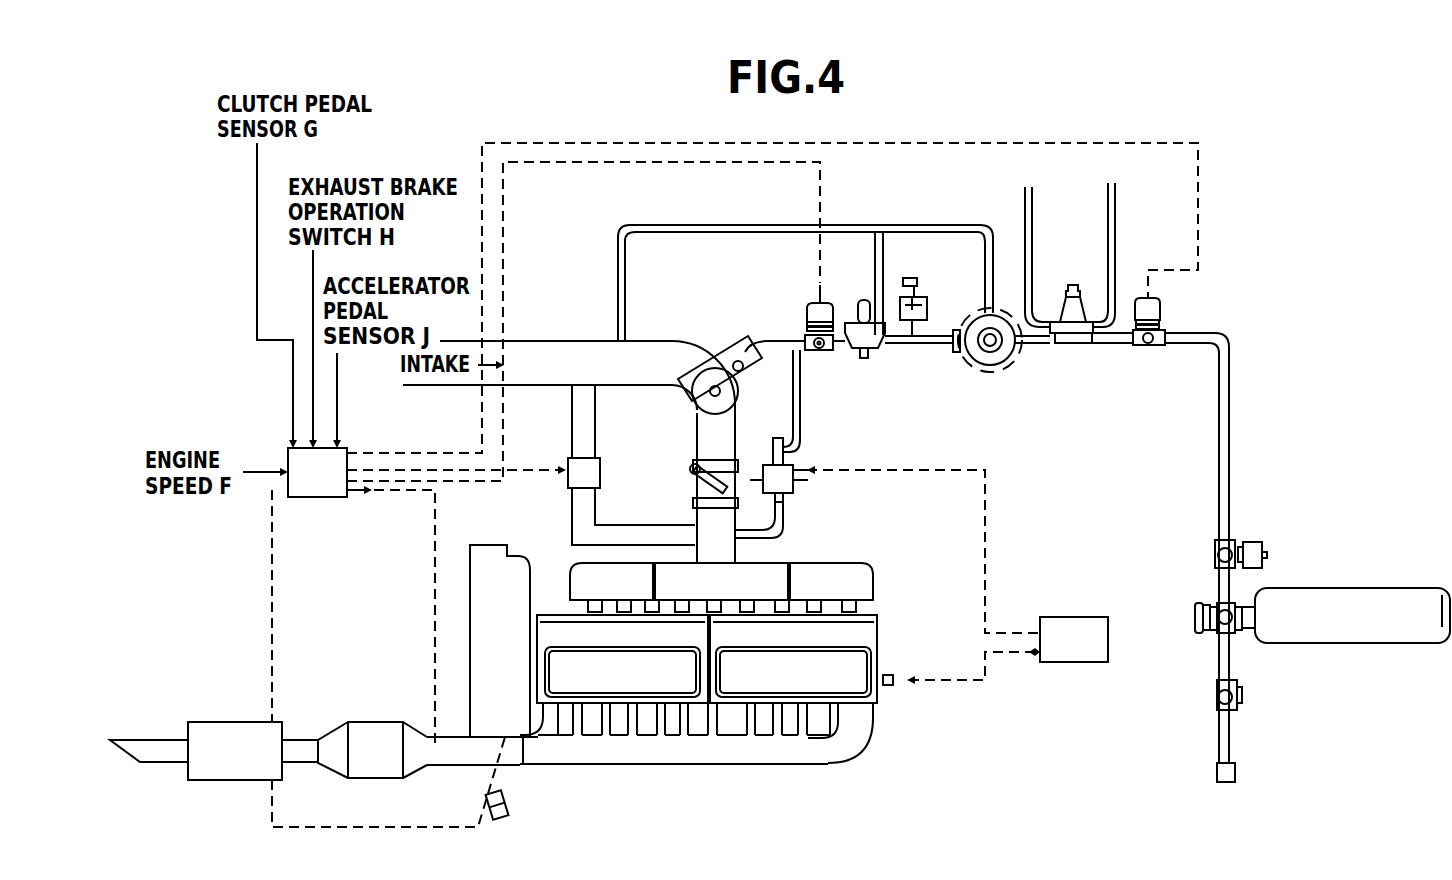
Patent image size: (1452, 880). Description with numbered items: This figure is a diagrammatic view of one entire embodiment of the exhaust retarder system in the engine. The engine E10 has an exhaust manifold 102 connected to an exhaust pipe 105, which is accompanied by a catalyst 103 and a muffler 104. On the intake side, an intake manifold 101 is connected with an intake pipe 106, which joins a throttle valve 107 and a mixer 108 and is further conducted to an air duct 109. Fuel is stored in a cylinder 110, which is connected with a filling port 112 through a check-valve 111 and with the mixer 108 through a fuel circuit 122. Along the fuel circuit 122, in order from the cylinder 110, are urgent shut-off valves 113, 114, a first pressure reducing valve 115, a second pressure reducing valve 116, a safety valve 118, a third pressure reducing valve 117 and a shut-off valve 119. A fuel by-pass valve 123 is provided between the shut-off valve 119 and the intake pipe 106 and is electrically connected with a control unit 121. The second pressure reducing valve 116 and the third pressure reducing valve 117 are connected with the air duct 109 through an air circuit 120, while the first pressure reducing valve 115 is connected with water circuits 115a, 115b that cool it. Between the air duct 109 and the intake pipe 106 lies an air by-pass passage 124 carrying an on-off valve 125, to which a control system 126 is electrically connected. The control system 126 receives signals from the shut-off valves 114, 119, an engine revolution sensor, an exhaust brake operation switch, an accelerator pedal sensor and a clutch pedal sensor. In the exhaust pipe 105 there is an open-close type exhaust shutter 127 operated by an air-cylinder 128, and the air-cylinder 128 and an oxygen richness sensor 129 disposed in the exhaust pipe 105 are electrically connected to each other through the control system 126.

The intake manifold 101 is at (870, 575).
The exhaust manifold 102 is at (713, 748).
The catalyst 103 is at (363, 763).
The muffler 104 is at (220, 767).
The exhaust pipe 105 is at (457, 750).
The intake pipe 106 is at (735, 550).
The throttle valve 107 is at (692, 480).
The mixer 108 is at (733, 355).
The air duct 109 is at (538, 341).
The cylinder 110 is at (1410, 635).
The check-valve 111 is at (1242, 690).
The filling port 112 is at (1235, 767).
The urgent shut-off valve 113 is at (1248, 540).
The urgent shut-off valve 114 is at (1152, 297).
The first pressure reducing valve 115 is at (1075, 307).
The water circuit 115a is at (1120, 207).
The water circuit 115b is at (1032, 235).
The second pressure reducing valve 116 is at (1011, 352).
The third pressure reducing valve 117 is at (848, 353).
The safety valve 118 is at (925, 297).
The shut-off valve 119 is at (805, 315).
The air circuit 120 is at (847, 225).
The control unit 121 is at (1083, 617).
The fuel circuit 122 is at (1230, 387).
The fuel by-pass valve 123 is at (793, 490).
The air by-pass passage 124 is at (582, 517).
The on-off valve 125 is at (570, 467).
The control system 126 is at (352, 447).
The exhaust shutter 127 is at (502, 743).
The air-cylinder 128 is at (510, 817).
The oxygen richness sensor 129 is at (436, 743).
The engine E10 is at (887, 637).